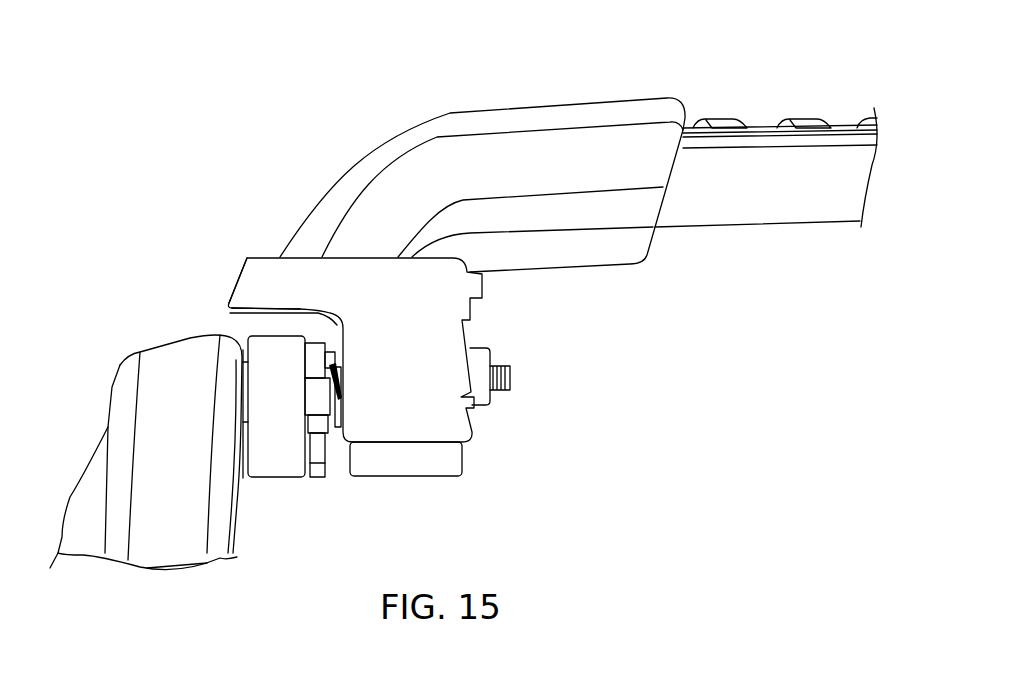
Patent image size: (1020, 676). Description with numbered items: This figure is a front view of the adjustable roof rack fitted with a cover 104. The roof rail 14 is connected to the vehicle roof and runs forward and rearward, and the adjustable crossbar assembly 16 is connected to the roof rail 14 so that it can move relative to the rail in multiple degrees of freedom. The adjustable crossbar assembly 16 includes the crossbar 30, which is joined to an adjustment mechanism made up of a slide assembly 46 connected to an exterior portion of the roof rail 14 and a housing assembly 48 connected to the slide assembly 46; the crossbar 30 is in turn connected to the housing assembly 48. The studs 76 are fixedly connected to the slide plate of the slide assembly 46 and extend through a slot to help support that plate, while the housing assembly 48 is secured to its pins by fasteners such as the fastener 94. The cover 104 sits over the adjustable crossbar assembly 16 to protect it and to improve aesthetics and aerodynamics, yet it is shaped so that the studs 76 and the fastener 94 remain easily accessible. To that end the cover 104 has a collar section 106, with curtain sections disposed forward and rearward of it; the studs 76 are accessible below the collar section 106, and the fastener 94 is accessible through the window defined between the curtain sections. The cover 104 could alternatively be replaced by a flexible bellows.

The roof rail 14 is at (122, 367).
The crossbar 30 is at (600, 110).
The cover 104 is at (250, 257).
The collar section 106 is at (238, 282).
The adjustable crossbar assembly 16 is at (515, 439).
The fastener 94 is at (478, 356).
The housing assembly 48 is at (410, 488).
The slide assembly 46 is at (270, 492).
The stud 76 is at (315, 470).